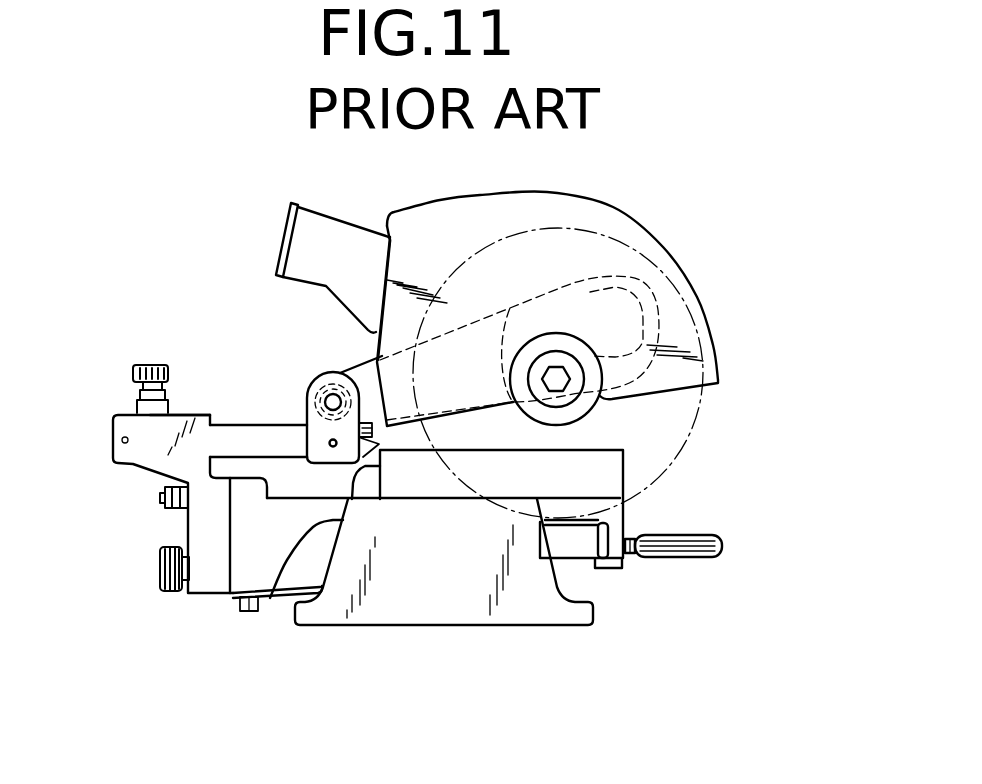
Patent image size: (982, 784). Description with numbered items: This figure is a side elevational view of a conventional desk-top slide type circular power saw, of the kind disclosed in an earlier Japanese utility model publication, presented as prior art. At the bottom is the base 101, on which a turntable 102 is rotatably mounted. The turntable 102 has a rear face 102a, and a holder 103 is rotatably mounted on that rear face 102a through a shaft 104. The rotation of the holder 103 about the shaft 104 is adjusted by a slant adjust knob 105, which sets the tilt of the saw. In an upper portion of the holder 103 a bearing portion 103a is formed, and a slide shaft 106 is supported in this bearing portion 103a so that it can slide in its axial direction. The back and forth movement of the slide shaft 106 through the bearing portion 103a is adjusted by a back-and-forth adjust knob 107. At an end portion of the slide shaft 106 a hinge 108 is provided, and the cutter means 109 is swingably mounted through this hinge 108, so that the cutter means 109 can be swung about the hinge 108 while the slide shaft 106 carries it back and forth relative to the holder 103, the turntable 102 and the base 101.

The base 101 is at (460, 600).
The turntable 102 is at (267, 570).
The rear face 102a is at (230, 563).
The holder 103 is at (203, 525).
The bearing portion 103a is at (200, 413).
The shaft 104 is at (162, 497).
The slant adjust knob 105 is at (162, 578).
The slide shaft 106 is at (268, 440).
The back-and-forth adjust knob 107 is at (147, 365).
The hinge 108 is at (319, 378).
The cutter means 109 is at (650, 240).